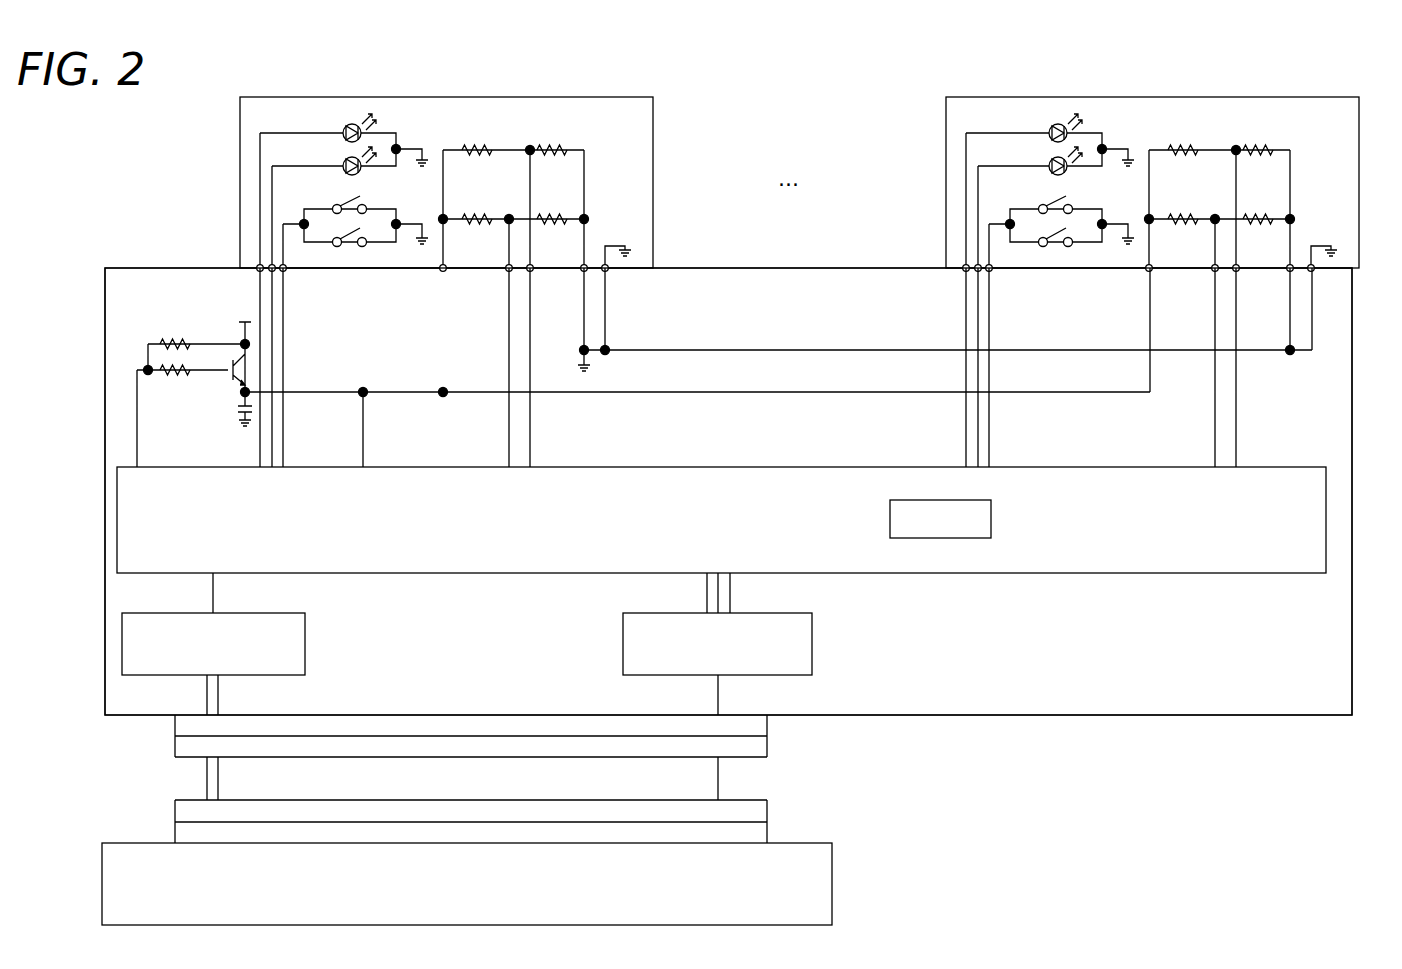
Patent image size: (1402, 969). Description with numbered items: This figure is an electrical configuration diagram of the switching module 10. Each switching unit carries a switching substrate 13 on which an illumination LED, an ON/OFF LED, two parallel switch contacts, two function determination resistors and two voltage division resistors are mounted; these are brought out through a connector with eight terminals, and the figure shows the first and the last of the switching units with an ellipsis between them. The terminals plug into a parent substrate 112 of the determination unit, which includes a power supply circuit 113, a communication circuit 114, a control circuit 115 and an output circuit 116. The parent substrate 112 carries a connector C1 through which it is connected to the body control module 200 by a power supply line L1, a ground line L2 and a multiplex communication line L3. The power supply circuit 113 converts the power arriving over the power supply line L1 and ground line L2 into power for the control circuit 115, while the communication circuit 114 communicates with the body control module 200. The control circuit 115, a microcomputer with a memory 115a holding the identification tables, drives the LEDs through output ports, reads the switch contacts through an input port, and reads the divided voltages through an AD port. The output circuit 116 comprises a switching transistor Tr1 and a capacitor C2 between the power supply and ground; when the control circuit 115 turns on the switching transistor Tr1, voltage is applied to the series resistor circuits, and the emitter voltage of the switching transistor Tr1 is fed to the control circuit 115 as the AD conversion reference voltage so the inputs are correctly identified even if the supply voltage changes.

The switching module 10 is at (156, 185).
The switching substrate 13 is at (653, 172).
The parent substrate 112 is at (998, 716).
The power supply circuit 113 is at (305, 655).
The communication circuit 114 is at (812, 645).
The control circuit 115 is at (968, 575).
The memory 115a is at (940, 500).
The output circuit 116 is at (193, 323).
The switching transistor Tr1 is at (232, 380).
The capacitor C2 is at (238, 416).
The connector C1 is at (770, 723).
The power supply line L1 is at (206, 775).
The ground line L2 is at (220, 786).
The multiplex communication line L3 is at (720, 780).
The body control module 200 is at (832, 881).